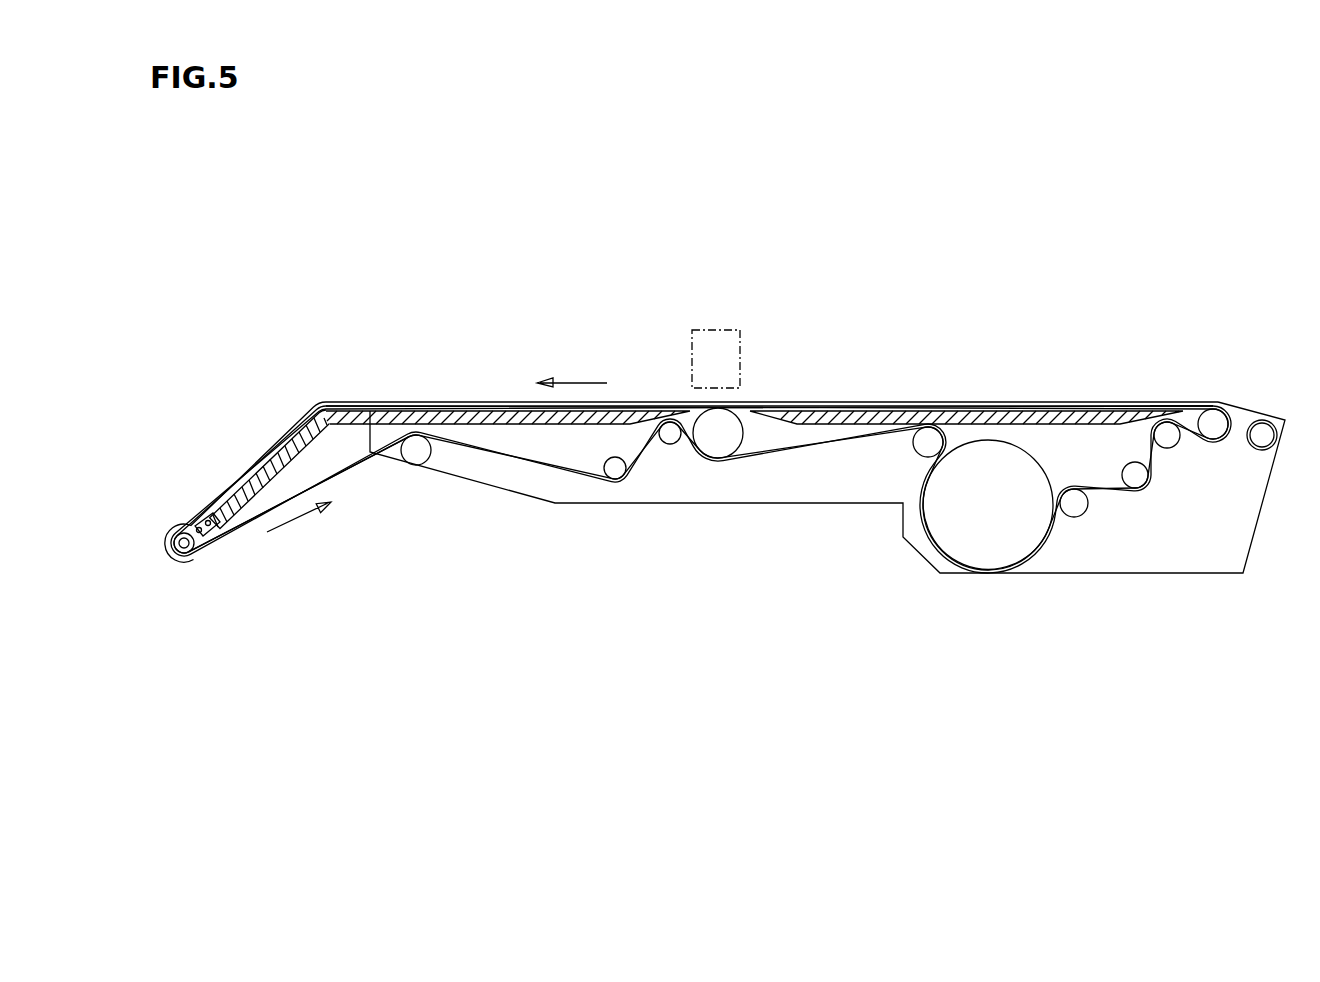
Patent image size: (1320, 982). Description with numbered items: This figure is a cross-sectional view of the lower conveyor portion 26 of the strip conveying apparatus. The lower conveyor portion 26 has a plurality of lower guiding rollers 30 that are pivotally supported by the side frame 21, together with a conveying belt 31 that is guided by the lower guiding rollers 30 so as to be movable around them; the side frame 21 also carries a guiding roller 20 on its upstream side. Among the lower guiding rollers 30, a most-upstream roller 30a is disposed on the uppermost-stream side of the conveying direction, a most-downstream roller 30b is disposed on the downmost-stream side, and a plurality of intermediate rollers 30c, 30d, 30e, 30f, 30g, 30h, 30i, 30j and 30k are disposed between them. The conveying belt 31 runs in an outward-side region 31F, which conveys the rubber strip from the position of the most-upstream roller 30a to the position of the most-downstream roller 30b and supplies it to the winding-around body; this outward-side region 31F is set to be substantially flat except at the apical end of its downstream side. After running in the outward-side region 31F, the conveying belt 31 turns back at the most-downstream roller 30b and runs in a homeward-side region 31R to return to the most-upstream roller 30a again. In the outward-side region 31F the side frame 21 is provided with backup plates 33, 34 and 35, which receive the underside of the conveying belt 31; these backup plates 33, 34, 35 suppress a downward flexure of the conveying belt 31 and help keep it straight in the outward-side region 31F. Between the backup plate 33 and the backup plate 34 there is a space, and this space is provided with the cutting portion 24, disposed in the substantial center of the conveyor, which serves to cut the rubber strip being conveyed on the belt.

The guiding roller 20 is at (1262, 418).
The side frame 21 is at (1245, 517).
The cutting portion 24 is at (716, 330).
The lower conveyor portion 26 is at (975, 280).
The lower guiding roller 30 is at (1195, 357).
The most-upstream roller 30a is at (1207, 410).
The most-downstream roller 30b is at (185, 553).
The roller 30c is at (1160, 423).
The roller 30d is at (1137, 480).
The roller 30e is at (1071, 510).
The roller 30f is at (955, 537).
The roller 30g is at (923, 442).
The roller 30h is at (722, 447).
The roller 30i is at (673, 436).
The roller 30j is at (613, 470).
The roller 30k is at (419, 452).
The conveying belt 31 is at (965, 405).
The outward-side region 31F is at (632, 402).
The homeward-side region 31R is at (345, 475).
The backup plate 33 is at (842, 415).
The backup plate 34 is at (458, 400).
The backup plate 35 is at (255, 468).